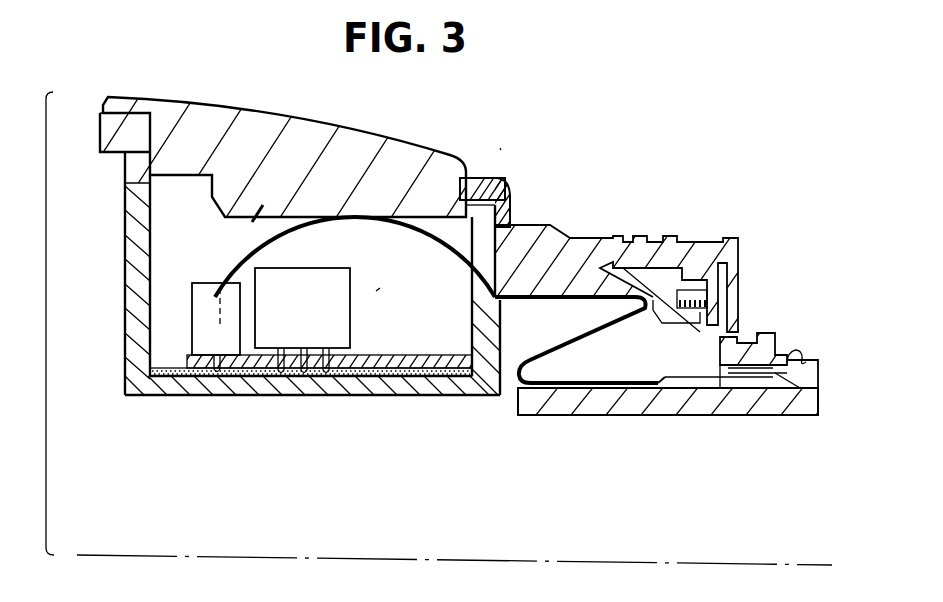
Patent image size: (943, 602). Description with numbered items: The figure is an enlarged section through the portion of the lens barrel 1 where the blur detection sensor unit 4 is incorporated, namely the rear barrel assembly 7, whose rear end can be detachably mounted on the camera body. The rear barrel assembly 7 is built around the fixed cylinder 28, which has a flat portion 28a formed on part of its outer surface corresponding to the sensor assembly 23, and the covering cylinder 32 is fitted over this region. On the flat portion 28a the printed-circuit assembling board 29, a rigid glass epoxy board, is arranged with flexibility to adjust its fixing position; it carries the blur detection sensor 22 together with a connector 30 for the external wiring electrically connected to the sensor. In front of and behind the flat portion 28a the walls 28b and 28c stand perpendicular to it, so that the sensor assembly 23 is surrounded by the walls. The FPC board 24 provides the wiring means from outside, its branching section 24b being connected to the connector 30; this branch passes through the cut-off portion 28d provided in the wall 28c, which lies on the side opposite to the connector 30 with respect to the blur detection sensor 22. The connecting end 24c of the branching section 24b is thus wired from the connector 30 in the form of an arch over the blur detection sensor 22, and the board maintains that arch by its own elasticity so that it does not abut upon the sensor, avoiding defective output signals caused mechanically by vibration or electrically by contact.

The lens barrel 1 is at (757, 563).
The blur detection sensor unit 4 is at (256, 213).
The rear barrel assembly 7 is at (499, 150).
The blur detection sensor 22 is at (274, 330).
The sensor assembly 23 is at (378, 290).
The FPC board 24 is at (573, 342).
The branching section of FPC board 24b is at (295, 228).
The connecting end of FPC board 24c is at (218, 300).
The fixed cylinder 28 is at (583, 245).
The flat portion 28a is at (175, 390).
The wall 28b is at (128, 234).
The wall 28c is at (484, 393).
The cut-off portion 28d is at (487, 248).
The printed-circuit assembling board 29 is at (372, 378).
The connector 30 is at (195, 332).
The covering cylinder 32 is at (392, 150).